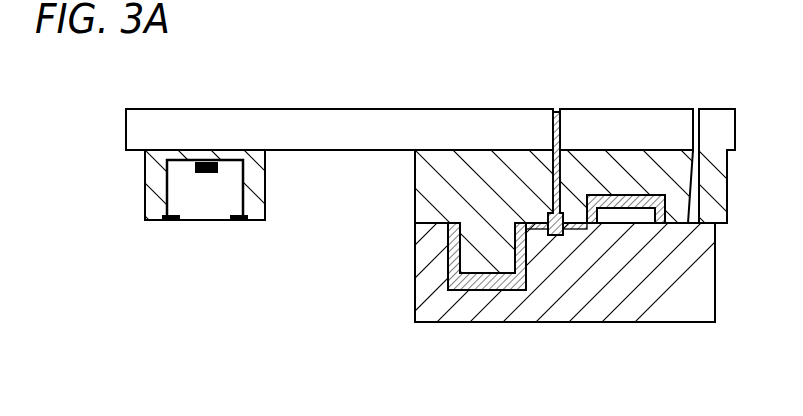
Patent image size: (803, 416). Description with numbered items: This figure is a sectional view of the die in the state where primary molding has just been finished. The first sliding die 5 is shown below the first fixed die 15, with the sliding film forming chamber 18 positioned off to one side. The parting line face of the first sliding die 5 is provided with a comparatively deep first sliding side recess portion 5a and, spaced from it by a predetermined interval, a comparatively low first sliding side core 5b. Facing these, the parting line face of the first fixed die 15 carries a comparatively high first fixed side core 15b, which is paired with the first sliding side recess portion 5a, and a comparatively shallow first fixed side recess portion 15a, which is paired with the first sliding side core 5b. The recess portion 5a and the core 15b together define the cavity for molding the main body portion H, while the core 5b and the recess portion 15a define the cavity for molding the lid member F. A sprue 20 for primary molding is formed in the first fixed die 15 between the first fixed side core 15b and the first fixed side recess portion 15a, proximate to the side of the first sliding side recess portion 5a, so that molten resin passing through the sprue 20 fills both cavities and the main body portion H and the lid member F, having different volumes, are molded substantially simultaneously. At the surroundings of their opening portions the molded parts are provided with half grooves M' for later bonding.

The sliding film forming chamber 18 is at (205, 207).
The first fixed die 15 is at (445, 170).
The first fixed side recess portion 15a is at (625, 195).
The first fixed side core 15b is at (488, 267).
The sprue for primary molding 20 is at (566, 180).
The first sliding die 5 is at (585, 312).
The first sliding side recess portion 5a is at (463, 292).
The first sliding side core 5b is at (637, 210).
The main body portion H is at (479, 287).
The lid member F is at (623, 210).
The half groove for bonding M' is at (559, 191).